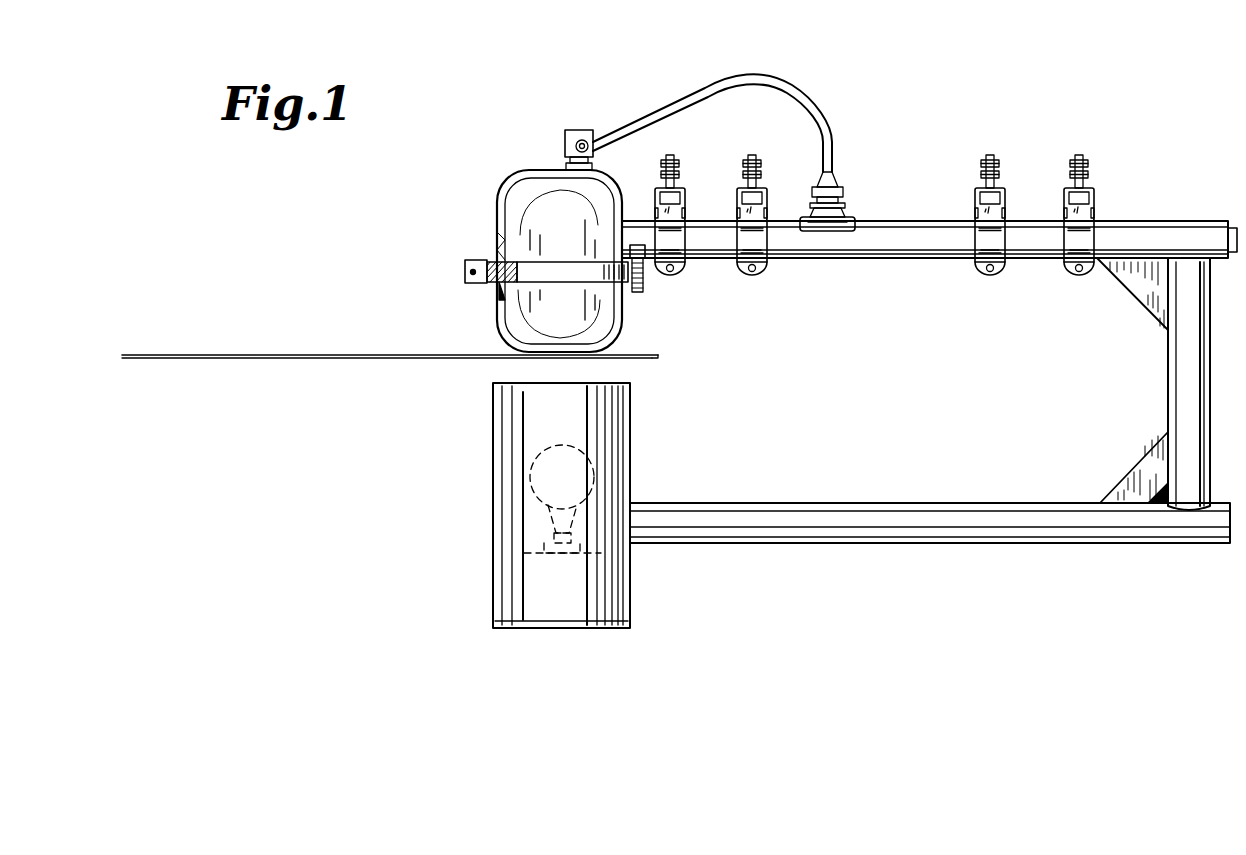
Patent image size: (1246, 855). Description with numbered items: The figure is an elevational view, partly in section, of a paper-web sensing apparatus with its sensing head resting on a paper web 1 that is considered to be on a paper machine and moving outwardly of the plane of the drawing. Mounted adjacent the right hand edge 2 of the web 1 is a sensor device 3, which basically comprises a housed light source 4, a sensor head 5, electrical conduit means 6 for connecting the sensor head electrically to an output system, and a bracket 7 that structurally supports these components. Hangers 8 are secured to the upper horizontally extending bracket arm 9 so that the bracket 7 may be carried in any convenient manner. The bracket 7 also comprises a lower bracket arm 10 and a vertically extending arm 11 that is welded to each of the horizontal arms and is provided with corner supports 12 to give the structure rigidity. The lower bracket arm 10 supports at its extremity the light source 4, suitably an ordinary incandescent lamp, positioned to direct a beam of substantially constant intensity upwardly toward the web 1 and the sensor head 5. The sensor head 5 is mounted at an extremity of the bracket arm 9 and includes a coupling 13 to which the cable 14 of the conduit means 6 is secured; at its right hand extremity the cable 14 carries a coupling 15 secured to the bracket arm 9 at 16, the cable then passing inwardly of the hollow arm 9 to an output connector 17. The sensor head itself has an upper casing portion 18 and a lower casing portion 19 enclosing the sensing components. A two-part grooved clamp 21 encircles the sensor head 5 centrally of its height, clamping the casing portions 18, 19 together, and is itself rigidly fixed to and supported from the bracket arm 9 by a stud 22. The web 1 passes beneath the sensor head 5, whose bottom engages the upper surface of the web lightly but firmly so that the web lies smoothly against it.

The paper web 1 is at (372, 355).
The right hand edge 2 is at (660, 362).
The sensor device 3 is at (930, 549).
The housed light source 4 is at (497, 540).
The sensor head 5 is at (540, 244).
The electrical conduit means 6 is at (712, 103).
The bracket 7 is at (1152, 384).
The hangers 8 is at (750, 157).
The upper horizontally extending bracket arm 9 is at (915, 222).
The lower bracket arm 10 is at (978, 543).
The vertically extending arm 11 is at (1176, 350).
The corner supports 12 is at (1128, 290).
The coupling 13 is at (575, 130).
The cable 14 is at (722, 86).
The coupling 15 is at (838, 186).
The securing point on bracket arm 16 is at (855, 216).
The output connector 17 is at (1233, 236).
The upper casing portion 18 is at (568, 230).
The lower casing portion 19 is at (568, 315).
The two-part grooved clamp 21 is at (630, 292).
The stud 22 is at (646, 272).